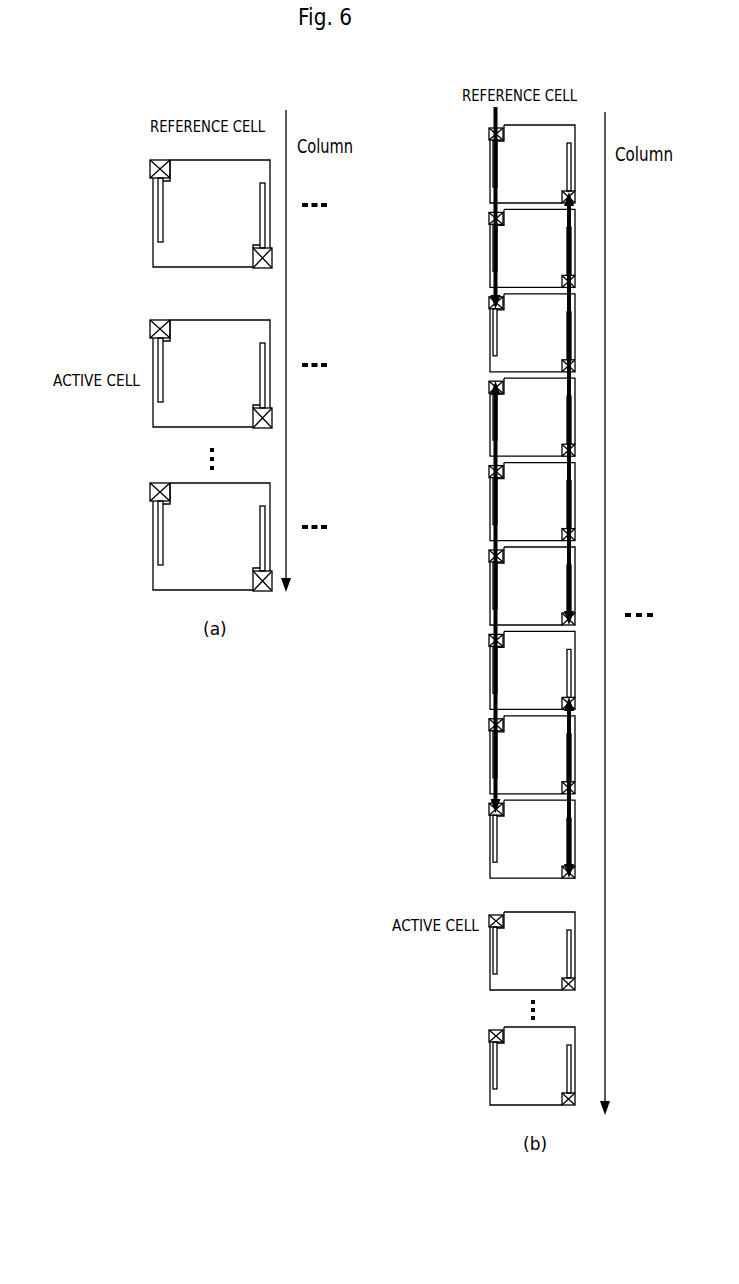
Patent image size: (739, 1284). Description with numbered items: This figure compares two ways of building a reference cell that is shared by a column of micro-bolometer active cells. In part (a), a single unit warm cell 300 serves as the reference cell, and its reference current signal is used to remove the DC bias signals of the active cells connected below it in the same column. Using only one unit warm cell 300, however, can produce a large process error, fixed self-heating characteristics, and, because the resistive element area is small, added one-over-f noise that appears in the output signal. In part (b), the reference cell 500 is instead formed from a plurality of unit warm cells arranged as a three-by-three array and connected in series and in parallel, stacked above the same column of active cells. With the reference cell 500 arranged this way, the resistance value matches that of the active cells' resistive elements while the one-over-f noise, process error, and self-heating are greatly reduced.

The unit warm cell 300 is at (165, 255).
The reference cell 500 is at (582, 114).